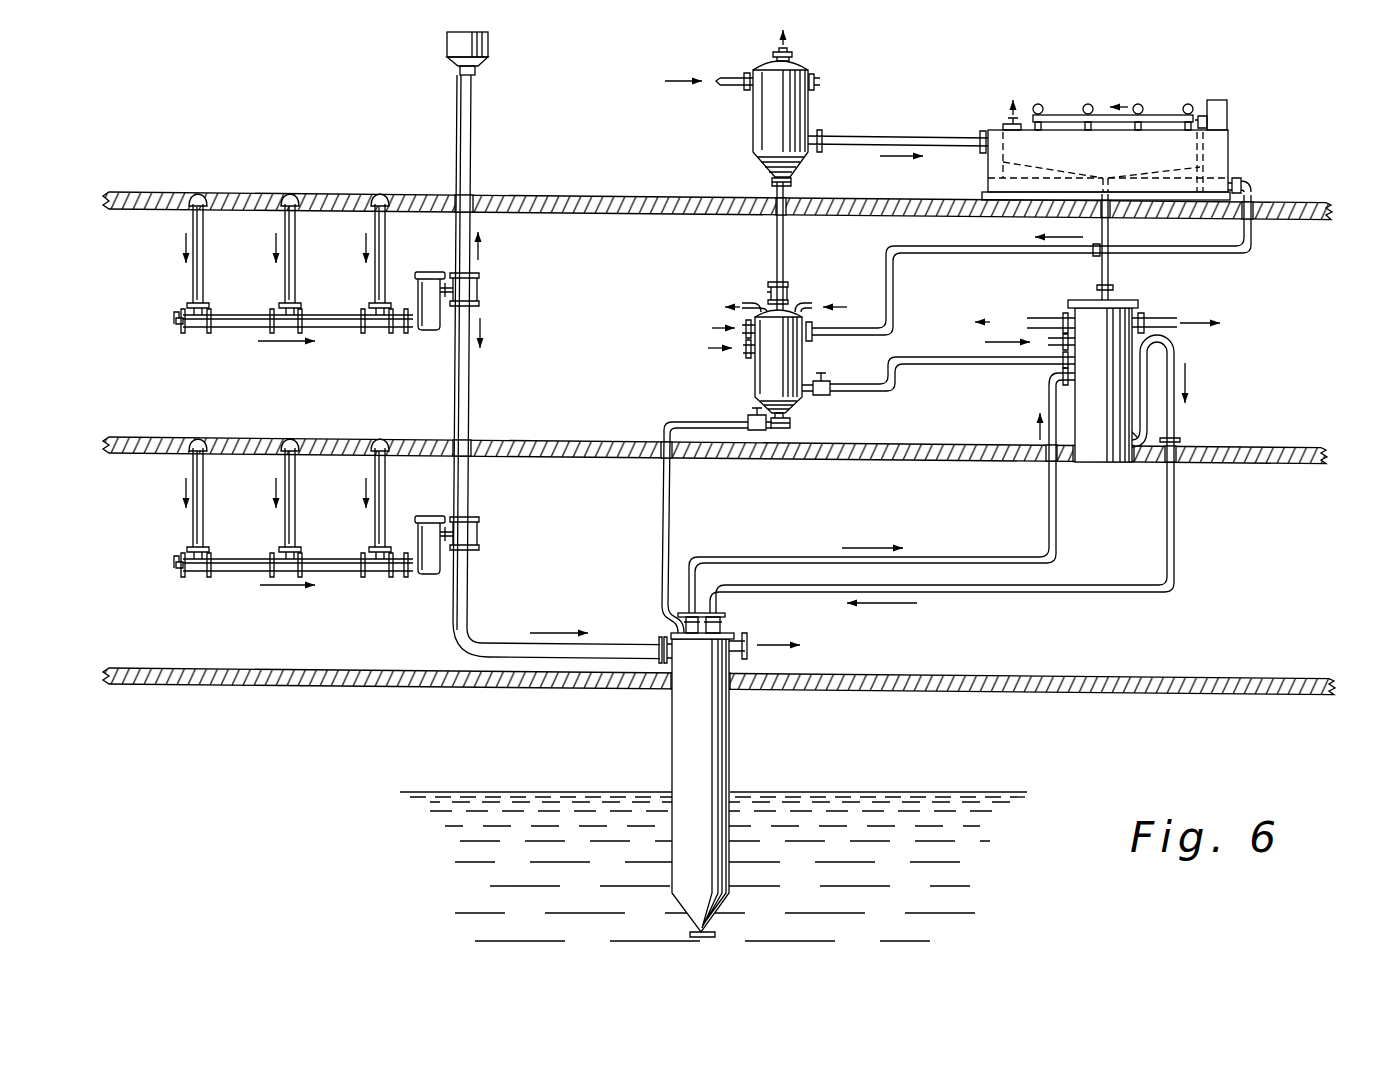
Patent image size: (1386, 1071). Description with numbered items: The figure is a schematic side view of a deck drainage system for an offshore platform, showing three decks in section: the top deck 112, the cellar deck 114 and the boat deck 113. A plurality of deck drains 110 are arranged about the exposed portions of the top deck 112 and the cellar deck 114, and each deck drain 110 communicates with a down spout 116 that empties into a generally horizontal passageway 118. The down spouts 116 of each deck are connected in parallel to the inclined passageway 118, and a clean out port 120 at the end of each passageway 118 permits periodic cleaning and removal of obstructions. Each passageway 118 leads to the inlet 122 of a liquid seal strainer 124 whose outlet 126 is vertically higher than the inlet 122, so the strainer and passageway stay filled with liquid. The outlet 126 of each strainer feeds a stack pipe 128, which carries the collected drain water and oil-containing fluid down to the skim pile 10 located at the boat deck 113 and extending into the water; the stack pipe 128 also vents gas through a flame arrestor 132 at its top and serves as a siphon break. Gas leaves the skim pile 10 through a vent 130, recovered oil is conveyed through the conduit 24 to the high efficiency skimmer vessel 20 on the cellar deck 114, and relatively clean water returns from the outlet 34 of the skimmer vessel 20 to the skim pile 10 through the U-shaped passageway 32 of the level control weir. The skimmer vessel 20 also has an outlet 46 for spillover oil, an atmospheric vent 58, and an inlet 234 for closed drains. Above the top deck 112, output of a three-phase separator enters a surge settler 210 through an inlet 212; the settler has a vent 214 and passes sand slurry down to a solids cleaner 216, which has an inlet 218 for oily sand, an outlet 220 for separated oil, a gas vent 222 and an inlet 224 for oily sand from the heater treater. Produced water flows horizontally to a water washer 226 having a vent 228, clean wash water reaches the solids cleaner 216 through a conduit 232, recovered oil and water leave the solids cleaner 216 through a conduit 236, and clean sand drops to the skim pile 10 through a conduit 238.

The skim pile 10 is at (729, 740).
The high efficiency skimmer vessel 20 is at (1130, 300).
The conduit 24 is at (1052, 562).
The level control weir assembly 32 is at (1175, 351).
The outlet 34 is at (1134, 436).
The outlet for the spillover oil 46 is at (1172, 313).
The atmospheric vent 58 is at (1051, 310).
The deck drains 110 is at (203, 191).
The top deck 112 is at (602, 213).
The boat deck 113 is at (552, 690).
The cellar deck 114 is at (541, 458).
The down spout 116 is at (204, 264).
The horizontal passageway 118 is at (347, 329).
The clean out port 120 is at (183, 318).
The inlet 122 is at (395, 331).
The liquid seal strainer 124 is at (433, 333).
The outlet 126 is at (451, 268).
The stack pipe 128 is at (473, 400).
The vent 130 is at (749, 640).
The flame arrestor 132 is at (488, 50).
The surge settler 210 is at (757, 123).
The inlet 212 is at (735, 78).
The vent 214 is at (791, 56).
The solids cleaner 216 is at (800, 356).
The inlet 218 is at (735, 321).
The outlet 220 is at (740, 353).
The gas vent 222 is at (748, 300).
The inlet 224 is at (814, 300).
The water washer 226 is at (1220, 150).
The vent to atmosphere 228 is at (1005, 118).
The conduit 232 is at (924, 250).
The inlet 234 is at (1050, 333).
The conduit 236 is at (922, 366).
The conduit 238 is at (663, 520).